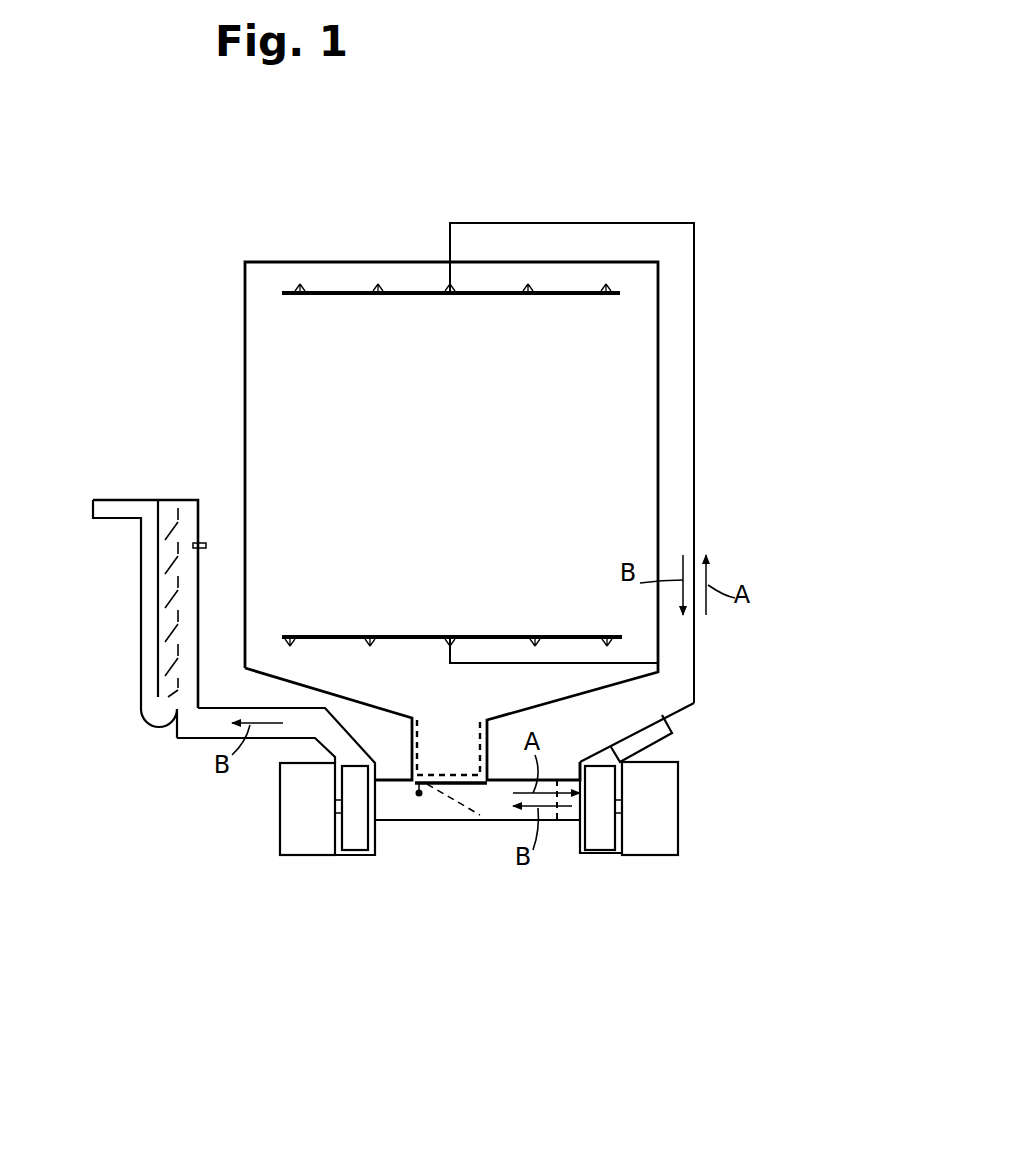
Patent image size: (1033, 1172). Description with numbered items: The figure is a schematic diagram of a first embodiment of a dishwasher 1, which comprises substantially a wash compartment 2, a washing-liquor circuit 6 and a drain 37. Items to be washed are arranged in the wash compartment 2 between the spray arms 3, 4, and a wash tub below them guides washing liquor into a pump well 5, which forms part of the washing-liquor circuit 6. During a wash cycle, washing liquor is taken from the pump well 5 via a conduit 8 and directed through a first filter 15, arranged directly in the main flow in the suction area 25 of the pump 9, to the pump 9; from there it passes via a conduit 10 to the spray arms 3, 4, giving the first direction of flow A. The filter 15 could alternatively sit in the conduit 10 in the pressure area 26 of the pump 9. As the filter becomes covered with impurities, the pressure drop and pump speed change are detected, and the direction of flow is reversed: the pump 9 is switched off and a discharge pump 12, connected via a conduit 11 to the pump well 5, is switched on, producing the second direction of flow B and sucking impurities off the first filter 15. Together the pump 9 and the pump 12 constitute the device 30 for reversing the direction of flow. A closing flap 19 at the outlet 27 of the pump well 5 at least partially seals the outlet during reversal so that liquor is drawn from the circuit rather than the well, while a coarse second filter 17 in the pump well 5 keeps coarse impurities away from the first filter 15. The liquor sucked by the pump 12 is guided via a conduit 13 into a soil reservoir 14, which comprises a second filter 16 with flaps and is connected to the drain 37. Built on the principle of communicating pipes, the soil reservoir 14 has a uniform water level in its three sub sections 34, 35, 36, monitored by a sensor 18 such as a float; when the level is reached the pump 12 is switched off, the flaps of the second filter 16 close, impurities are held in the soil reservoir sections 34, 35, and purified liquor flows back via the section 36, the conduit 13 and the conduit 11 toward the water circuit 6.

The dishwasher 1 is at (342, 236).
The wash compartment 2 is at (243, 337).
The spray arm 3 is at (553, 296).
The spray arm 4 is at (495, 636).
The pump well 5 is at (490, 740).
The washing-liquor circuit 6 is at (697, 385).
The conduit 8 is at (512, 820).
The pump 9 is at (665, 845).
The conduit 10 is at (697, 458).
The conduit 11 is at (403, 822).
The pump 12 is at (290, 820).
The conduit 13 is at (340, 722).
The soil reservoir 14 is at (140, 655).
The first filter 15 is at (555, 818).
The second filter 16 is at (180, 598).
The second filter 17 is at (420, 740).
The sensor 18 is at (208, 541).
The closing flap 19 is at (463, 791).
The suction area 25 is at (561, 776).
The pressure area 26 is at (655, 743).
The outlet 27 is at (412, 777).
The device for reversing the direction of flow 30 is at (478, 862).
The soil reservoir section 34 is at (150, 527).
The soil reservoir section 35 is at (168, 500).
The soil reservoir section 36 is at (190, 500).
The drain 37 is at (95, 512).